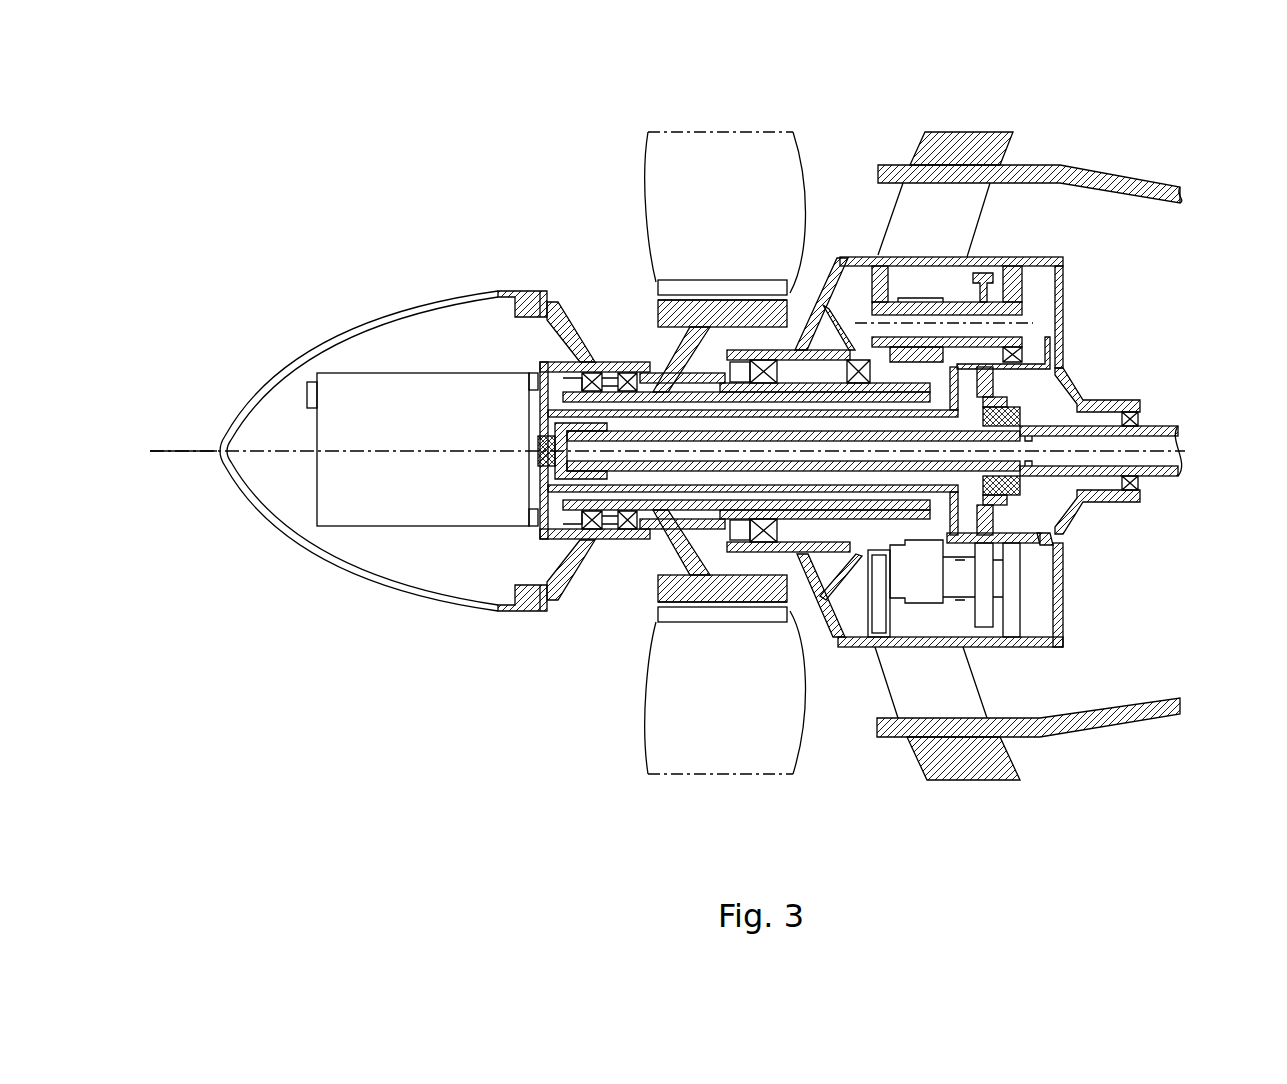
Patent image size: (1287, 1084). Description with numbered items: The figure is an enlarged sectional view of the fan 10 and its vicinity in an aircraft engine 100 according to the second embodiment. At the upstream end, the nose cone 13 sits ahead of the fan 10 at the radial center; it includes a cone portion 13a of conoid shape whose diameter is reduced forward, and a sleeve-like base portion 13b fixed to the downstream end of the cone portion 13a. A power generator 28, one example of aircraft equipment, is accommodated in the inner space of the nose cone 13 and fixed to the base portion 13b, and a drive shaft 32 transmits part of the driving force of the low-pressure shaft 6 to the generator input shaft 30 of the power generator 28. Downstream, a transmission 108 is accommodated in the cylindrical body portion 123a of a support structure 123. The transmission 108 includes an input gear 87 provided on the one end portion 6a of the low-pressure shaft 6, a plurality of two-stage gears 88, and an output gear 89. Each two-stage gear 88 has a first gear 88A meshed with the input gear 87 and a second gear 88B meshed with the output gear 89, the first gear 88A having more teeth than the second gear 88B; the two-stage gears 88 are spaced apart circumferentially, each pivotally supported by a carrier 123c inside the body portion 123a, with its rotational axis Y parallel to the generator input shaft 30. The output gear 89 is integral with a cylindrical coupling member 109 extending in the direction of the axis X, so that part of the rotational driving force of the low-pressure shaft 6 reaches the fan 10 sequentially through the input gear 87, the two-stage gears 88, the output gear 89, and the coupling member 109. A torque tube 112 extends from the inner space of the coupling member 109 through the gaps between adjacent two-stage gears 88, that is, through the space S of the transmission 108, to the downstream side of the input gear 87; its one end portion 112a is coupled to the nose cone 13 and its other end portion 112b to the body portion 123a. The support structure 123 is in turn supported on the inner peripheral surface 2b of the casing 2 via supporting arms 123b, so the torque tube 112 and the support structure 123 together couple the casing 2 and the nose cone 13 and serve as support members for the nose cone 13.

The aircraft engine 100 is at (400, 192).
The fan 10 is at (628, 170).
The two-stage gear 88 is at (953, 290).
The first gear 88A is at (997, 302).
The second gear 88B is at (892, 268).
The casing 2 is at (1062, 162).
The inner peripheral surface 2b is at (1160, 185).
The nose cone 13 is at (277, 376).
The cone portion 13a is at (283, 540).
The base portion 13b is at (548, 290).
The power generator 28 is at (381, 371).
The generator input shaft 30 is at (578, 427).
The low-pressure shaft 6 is at (1170, 400).
The one end portion 6a is at (990, 398).
The input gear 87 is at (1010, 415).
The transmission 108 is at (1068, 290).
The support structure 123 is at (1070, 600).
The body portion 123a is at (1053, 630).
The supporting arm 123b is at (980, 692).
The carrier 123c is at (1028, 308).
The torque tube 112 is at (660, 520).
The one end portion 112a is at (545, 540).
The other end portion 112b is at (1050, 535).
The drive shaft 32 is at (690, 525).
The output gear 89 is at (905, 568).
The coupling member 109 is at (880, 537).
The space S is at (965, 560).
The axis X is at (250, 451).
The rotational axis Y is at (862, 323).